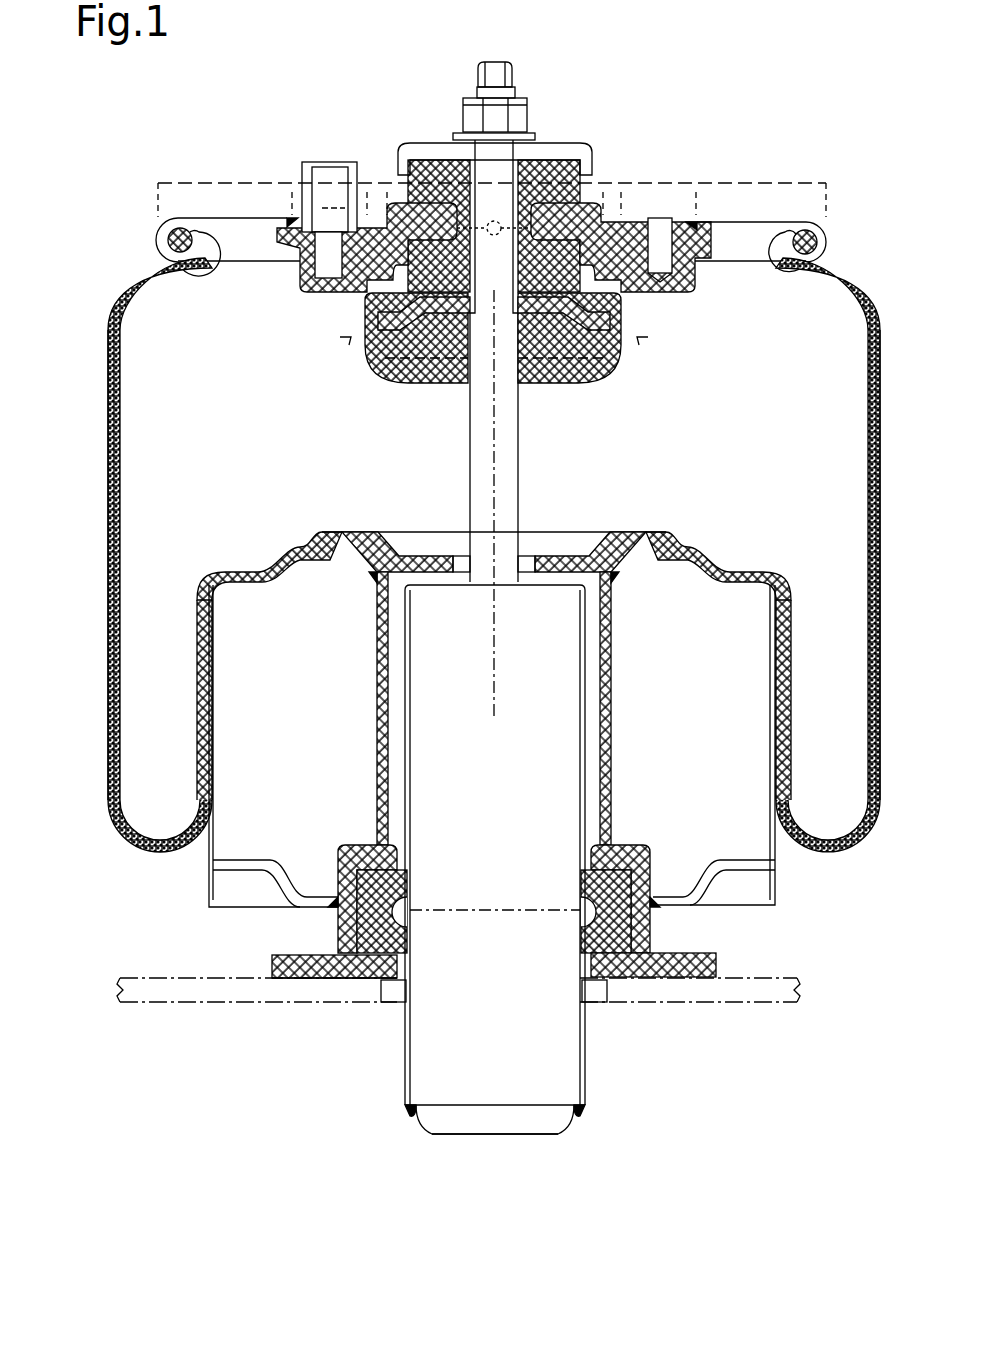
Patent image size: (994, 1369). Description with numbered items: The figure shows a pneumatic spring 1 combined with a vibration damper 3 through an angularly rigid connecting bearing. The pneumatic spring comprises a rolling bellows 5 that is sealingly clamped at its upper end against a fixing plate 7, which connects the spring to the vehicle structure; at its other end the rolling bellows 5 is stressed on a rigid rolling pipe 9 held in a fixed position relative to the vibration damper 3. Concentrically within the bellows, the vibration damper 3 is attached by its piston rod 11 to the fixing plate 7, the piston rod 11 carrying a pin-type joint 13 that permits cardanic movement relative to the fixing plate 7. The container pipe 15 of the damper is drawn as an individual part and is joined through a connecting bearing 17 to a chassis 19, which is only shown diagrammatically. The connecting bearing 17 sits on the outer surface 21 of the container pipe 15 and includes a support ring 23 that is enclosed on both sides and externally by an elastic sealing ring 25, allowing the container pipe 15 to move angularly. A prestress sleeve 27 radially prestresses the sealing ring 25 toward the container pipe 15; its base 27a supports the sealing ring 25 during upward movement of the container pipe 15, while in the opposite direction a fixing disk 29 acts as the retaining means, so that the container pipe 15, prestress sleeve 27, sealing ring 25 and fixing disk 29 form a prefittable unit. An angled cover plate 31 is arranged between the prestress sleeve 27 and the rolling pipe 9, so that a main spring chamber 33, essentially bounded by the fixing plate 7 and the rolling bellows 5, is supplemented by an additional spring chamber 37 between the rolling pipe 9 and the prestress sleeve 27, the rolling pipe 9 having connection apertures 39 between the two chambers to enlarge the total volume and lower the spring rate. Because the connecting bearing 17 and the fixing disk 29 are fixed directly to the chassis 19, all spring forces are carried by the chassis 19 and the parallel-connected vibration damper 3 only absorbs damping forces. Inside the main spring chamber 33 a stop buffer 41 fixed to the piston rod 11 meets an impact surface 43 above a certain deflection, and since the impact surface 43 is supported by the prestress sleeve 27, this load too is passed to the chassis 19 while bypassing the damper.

The pneumatic spring 1 is at (215, 1172).
The vibration damper 3 is at (447, 1159).
The rolling bellows 5 is at (118, 632).
The fixing plate 7 is at (250, 245).
The rolling pipe 9 is at (207, 871).
The piston rod 11 is at (503, 478).
The pin-type joint 13 is at (612, 182).
The container pipe 15 is at (404, 1082).
The connecting bearing 17 is at (600, 1006).
The chassis 19 is at (782, 1004).
The outer surface 21 is at (401, 1017).
The support ring 23 is at (338, 905).
The sealing ring 25 is at (362, 932).
The prestress sleeve 27 is at (376, 746).
The base 27a is at (356, 845).
The fixing disk 29 is at (255, 1007).
The cover plate 31 is at (748, 876).
The main spring chamber 33 is at (150, 428).
The additional spring chamber 37 is at (237, 688).
The connection apertures 39 is at (331, 540).
The stop buffer 41 is at (392, 337).
The impact surface 43 is at (383, 560).